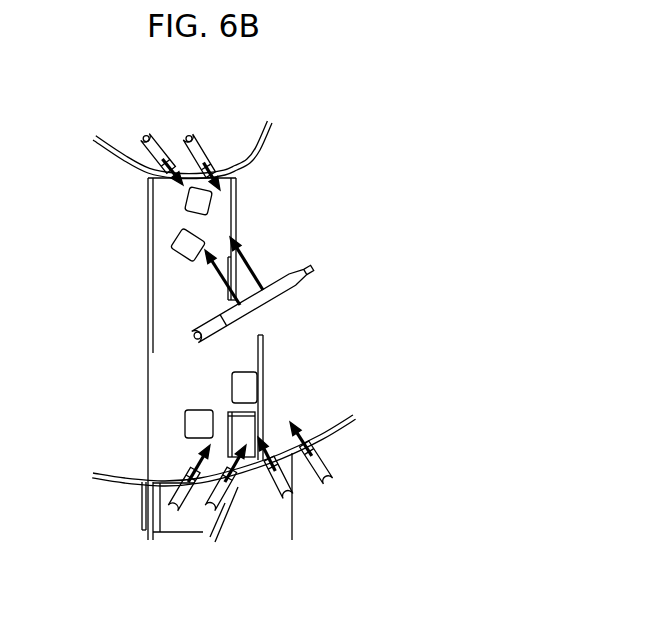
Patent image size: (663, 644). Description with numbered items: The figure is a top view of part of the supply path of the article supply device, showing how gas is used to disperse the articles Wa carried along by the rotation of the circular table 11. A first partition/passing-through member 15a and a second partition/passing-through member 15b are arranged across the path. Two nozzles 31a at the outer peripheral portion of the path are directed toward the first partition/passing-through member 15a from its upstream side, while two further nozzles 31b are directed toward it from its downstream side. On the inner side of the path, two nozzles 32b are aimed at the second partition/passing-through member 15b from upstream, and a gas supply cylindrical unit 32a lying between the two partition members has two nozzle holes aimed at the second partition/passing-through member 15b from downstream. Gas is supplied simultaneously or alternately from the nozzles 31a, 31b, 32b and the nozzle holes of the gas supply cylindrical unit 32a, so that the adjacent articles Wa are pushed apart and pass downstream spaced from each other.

The table 11 is at (340, 420).
The first partition/passing-through member 15a is at (263, 353).
The second partition/passing-through member 15b is at (238, 198).
The nozzles 31a is at (210, 512).
The nozzles 31b is at (289, 500).
The gas supply cylindrical unit 32a is at (288, 288).
The nozzles 32b is at (187, 131).
The articles Wa is at (196, 200).